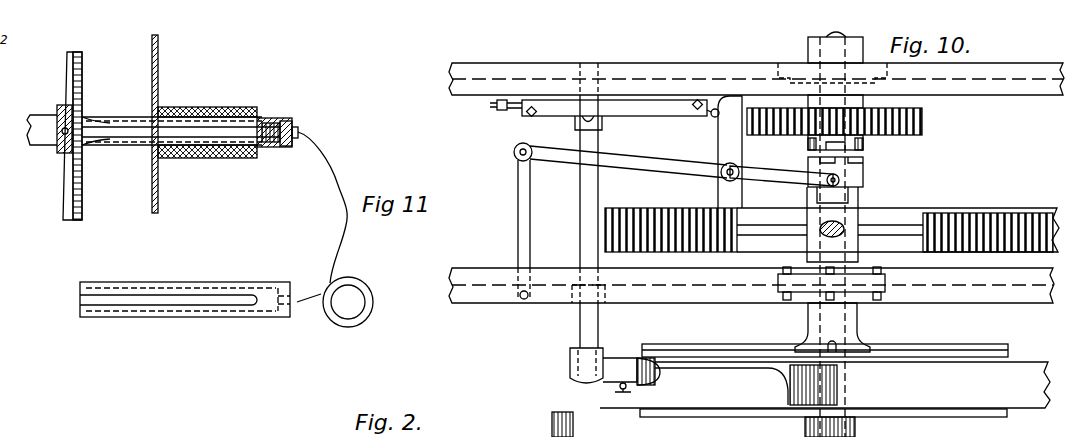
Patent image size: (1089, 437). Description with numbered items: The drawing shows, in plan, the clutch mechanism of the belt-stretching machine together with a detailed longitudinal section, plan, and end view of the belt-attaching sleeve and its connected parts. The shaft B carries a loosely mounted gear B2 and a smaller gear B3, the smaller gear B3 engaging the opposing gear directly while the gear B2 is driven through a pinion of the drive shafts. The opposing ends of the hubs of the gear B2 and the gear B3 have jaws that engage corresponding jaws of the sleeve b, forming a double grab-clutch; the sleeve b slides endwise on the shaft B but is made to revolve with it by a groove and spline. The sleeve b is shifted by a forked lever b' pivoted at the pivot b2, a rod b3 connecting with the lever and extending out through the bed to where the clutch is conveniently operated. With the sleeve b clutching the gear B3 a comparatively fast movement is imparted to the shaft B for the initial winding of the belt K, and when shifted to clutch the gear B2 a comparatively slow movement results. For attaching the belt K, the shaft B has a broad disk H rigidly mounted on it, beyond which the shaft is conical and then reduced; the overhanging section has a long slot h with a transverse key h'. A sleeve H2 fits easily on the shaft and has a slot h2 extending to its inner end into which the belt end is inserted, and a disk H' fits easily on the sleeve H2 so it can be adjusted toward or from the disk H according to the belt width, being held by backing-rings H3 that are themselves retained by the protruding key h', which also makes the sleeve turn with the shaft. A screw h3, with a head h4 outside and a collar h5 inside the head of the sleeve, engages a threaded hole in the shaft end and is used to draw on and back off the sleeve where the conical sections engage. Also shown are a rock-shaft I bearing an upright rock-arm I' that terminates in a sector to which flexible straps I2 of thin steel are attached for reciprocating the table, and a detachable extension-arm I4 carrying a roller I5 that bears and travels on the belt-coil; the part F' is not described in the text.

In FIG. 11, the shaft B is at (49, 129).
In FIG. 10, the shaft B is at (838, 35).
In FIG. 10, the gear B2 is at (1014, 213).
In FIG. 10, the smaller gear B3 is at (922, 125).
In FIG. 10, the sleeve b is at (845, 172).
In FIG. 10, the forked lever b' is at (784, 167).
In FIG. 10, the pivot b2 is at (722, 179).
In FIG. 10, the rod b3 is at (530, 213).
In FIG. 11, the disk H is at (82, 130).
In FIG. 10, the disk H is at (825, 341).
In FIG. 11, the disk H' is at (168, 124).
In FIG. 10, the disk H' is at (823, 422).
In FIG. 11, the sleeve H2 is at (132, 148).
In FIG. 11, the backing-rings H3 is at (207, 107).
In FIG. 10, the backing-rings H3 is at (805, 424).
In FIG. 11, the slot h is at (181, 116).
In FIG. 11, the transverse key h' is at (274, 116).
In FIG. 11, the slot h2 is at (82, 299).
In FIG. 11, the screw h3 is at (276, 122).
In FIG. 11, the head h4 is at (298, 130).
In FIG. 11, the collar h5 is at (288, 120).
In FIG. 10, the rock-shaft I is at (580, 223).
In FIG. 10, the upright rock-arm I' is at (600, 131).
In FIG. 10, the flexible straps I2 is at (670, 104).
In FIG. 10, the detachable extension-arm I4 is at (741, 376).
In FIG. 10, the roller I5 is at (837, 382).
In FIG. 10, the belt K is at (825, 385).
In FIG. 10, the block F' is at (571, 415).